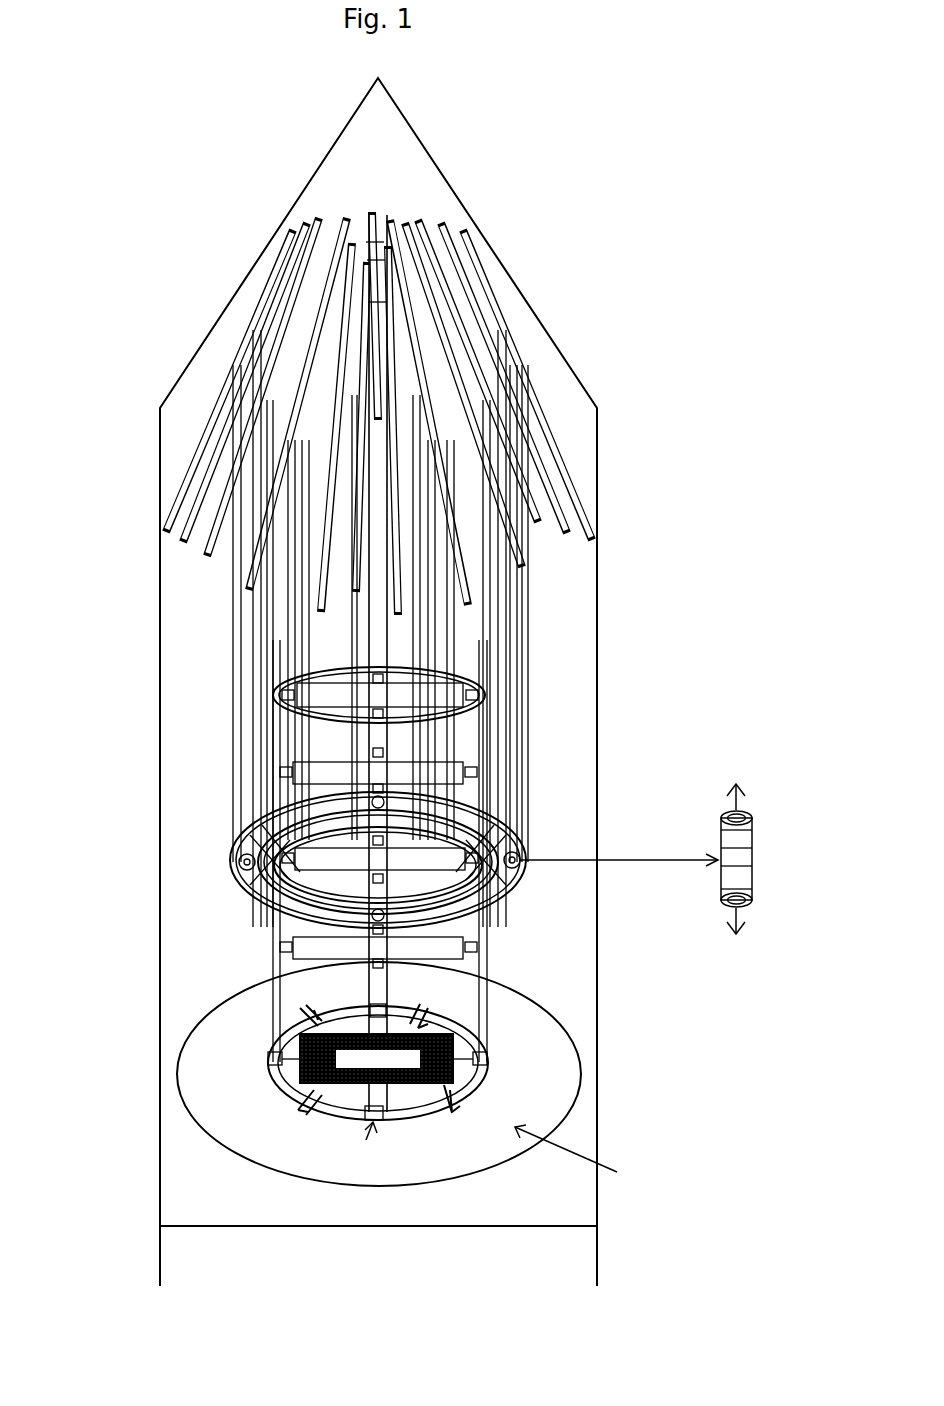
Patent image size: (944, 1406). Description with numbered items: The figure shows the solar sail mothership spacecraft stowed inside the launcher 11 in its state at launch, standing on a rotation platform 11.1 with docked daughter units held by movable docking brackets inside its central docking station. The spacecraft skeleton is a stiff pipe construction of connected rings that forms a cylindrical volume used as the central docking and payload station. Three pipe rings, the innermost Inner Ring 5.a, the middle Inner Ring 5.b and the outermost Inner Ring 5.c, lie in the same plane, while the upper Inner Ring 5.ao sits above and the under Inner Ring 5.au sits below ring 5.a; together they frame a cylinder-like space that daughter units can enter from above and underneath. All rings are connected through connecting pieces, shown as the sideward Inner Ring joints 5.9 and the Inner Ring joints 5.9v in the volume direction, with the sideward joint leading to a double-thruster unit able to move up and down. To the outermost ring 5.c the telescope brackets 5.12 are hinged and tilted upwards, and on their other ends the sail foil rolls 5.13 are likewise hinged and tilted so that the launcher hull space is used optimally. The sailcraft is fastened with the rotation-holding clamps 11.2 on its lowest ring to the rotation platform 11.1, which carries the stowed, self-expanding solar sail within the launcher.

The launcher 11 is at (566, 254).
The sail foil rolls 5.13 is at (372, 212).
The telescope brackets 5.12 is at (232, 615).
The upper Inner Ring 5.ao is at (470, 714).
The Inner Ring joint volume 5.9v is at (280, 787).
The middle Inner Ring 5.b is at (498, 845).
The Inner Ring joint sidewards 5.9 is at (465, 861).
The innermost Inner Ring 5.a is at (265, 867).
The outermost Inner Ring 5.c is at (504, 901).
The under Inner Ring 5.au is at (455, 1021).
The rotation-holding-clamp 11.2 is at (458, 1097).
The rotation platform 11.1 is at (215, 1098).